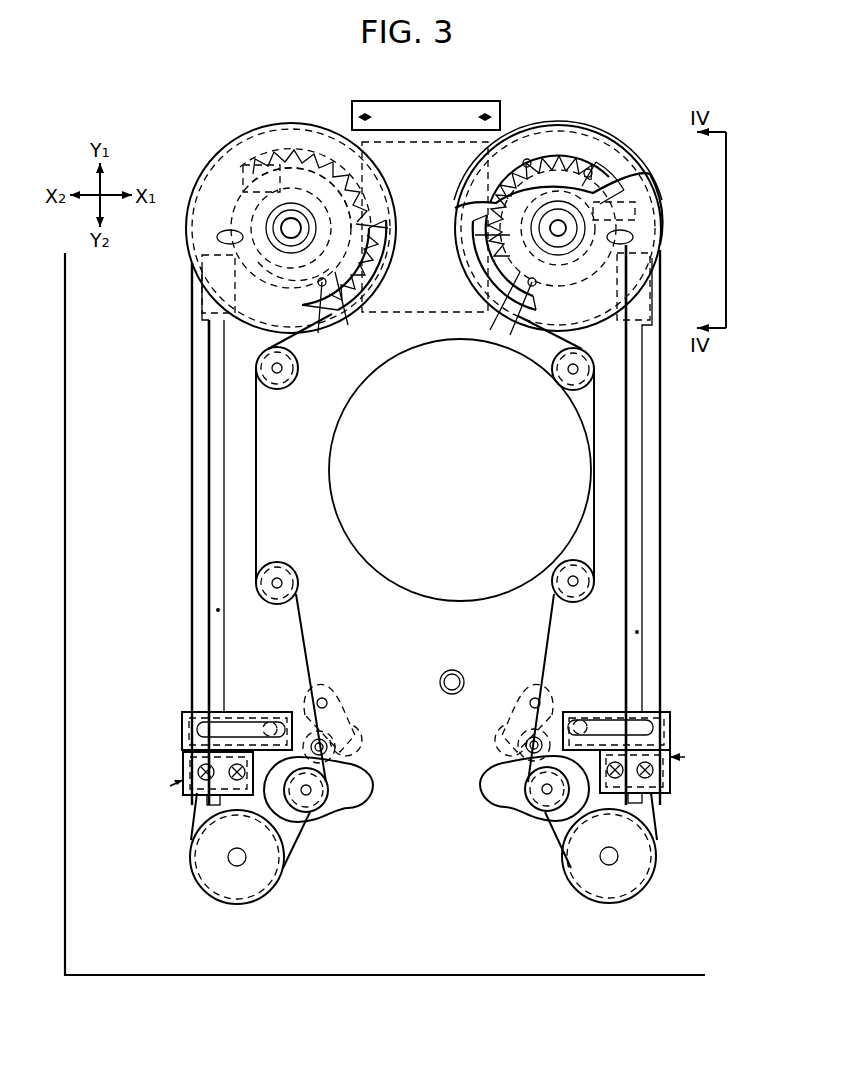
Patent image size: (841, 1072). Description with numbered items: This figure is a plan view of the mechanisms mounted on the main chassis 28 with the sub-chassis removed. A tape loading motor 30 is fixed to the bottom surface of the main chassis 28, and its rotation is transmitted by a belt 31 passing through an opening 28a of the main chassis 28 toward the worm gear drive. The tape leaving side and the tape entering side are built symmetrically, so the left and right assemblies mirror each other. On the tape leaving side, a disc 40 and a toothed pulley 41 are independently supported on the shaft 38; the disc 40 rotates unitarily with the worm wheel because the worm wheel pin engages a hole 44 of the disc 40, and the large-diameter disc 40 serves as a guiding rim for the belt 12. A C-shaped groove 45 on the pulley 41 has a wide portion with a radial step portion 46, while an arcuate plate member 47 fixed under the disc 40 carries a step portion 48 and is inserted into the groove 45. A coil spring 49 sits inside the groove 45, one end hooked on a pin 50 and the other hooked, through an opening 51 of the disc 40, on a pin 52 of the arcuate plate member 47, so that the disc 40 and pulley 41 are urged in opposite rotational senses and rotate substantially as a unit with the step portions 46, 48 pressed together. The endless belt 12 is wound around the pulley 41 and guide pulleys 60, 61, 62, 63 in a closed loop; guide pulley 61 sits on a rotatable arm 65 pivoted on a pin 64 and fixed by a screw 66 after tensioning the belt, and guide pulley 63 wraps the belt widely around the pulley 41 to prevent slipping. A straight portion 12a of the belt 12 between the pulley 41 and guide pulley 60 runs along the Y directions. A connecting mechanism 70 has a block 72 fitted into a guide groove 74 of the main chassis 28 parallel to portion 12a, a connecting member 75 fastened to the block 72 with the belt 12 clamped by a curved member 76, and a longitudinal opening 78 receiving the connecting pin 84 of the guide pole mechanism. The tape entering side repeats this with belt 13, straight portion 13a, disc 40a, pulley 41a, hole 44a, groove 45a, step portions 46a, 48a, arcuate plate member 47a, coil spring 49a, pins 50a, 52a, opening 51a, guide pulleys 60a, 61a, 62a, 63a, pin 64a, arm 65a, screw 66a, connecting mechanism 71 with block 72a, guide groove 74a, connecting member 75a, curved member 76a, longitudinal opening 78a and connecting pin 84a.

The belt 12 is at (660, 553).
The straight portion of the belt 12a is at (660, 493).
The belt 13 is at (192, 553).
The straight portion of the belt 13a is at (192, 495).
The main chassis 28 is at (405, 975).
The opening of the main chassis 28a is at (430, 101).
The tape loading motor 30 is at (400, 314).
The belt 31 is at (366, 112).
The shaft 38 is at (620, 180).
The disc 40 is at (662, 246).
The disc 40a is at (270, 125).
The pulley 41 is at (562, 125).
The pulley 41a is at (205, 175).
The hole of the disc 44 is at (632, 237).
The hole of the disc 44a is at (217, 237).
The C-shaped groove 45 is at (527, 158).
The C-shaped groove 45a is at (296, 150).
The step portion 46 is at (558, 233).
The step portion 46a is at (291, 276).
The arcuate plate member 47 is at (509, 336).
The arcuate plate member 47a is at (320, 334).
The step portion 48 is at (490, 272).
The step portion 48a is at (388, 243).
The coil spring 49 is at (500, 185).
The coil spring 49a is at (368, 190).
The pin 50 is at (565, 225).
The pin 50a is at (258, 168).
The opening of the disc 51 is at (500, 250).
The opening of the disc 51a is at (358, 230).
The pin 52 is at (522, 340).
The pin 52a is at (327, 331).
The guide pulley 60 is at (580, 885).
The guide pulley 60a is at (262, 888).
The guide pulley 61 is at (532, 806).
The guide pulley 61a is at (320, 808).
The guide pulley 62 is at (556, 592).
The guide pulley 62a is at (298, 588).
The guide pulley 63 is at (565, 386).
The guide pulley 63a is at (285, 386).
The pin 64 is at (535, 698).
The pin 64a is at (322, 698).
The rotatable arm 65 is at (512, 716).
The rotatable arm 65a is at (345, 716).
The screw 66 is at (518, 742).
The screw 66a is at (335, 742).
The connecting mechanism 70 is at (693, 758).
The connecting mechanism 71 is at (170, 786).
The block 72 is at (645, 795).
The block 72a is at (205, 798).
The guide groove 74 is at (640, 634).
The guide groove 74a is at (220, 614).
The connecting member 75 is at (668, 732).
The connecting member 75a is at (182, 728).
The curved member 76 is at (670, 774).
The curved member 76a is at (183, 770).
The longitudinal opening 78 is at (612, 722).
The longitudinal opening 78a is at (237, 722).
The connecting pin 84 is at (580, 720).
The connecting pin 84a is at (270, 722).